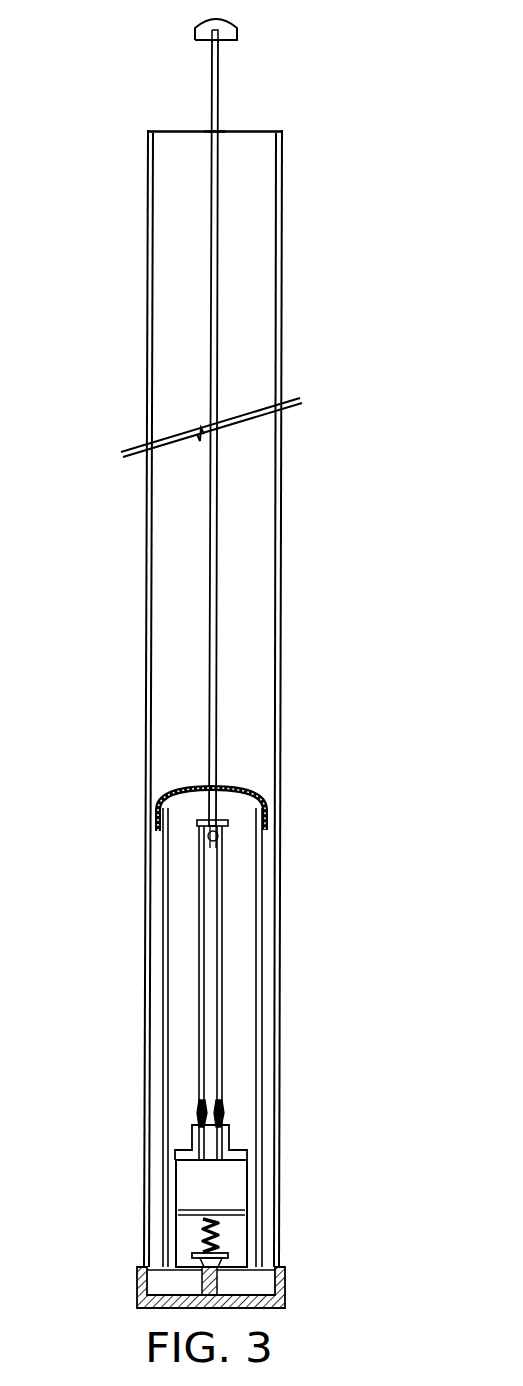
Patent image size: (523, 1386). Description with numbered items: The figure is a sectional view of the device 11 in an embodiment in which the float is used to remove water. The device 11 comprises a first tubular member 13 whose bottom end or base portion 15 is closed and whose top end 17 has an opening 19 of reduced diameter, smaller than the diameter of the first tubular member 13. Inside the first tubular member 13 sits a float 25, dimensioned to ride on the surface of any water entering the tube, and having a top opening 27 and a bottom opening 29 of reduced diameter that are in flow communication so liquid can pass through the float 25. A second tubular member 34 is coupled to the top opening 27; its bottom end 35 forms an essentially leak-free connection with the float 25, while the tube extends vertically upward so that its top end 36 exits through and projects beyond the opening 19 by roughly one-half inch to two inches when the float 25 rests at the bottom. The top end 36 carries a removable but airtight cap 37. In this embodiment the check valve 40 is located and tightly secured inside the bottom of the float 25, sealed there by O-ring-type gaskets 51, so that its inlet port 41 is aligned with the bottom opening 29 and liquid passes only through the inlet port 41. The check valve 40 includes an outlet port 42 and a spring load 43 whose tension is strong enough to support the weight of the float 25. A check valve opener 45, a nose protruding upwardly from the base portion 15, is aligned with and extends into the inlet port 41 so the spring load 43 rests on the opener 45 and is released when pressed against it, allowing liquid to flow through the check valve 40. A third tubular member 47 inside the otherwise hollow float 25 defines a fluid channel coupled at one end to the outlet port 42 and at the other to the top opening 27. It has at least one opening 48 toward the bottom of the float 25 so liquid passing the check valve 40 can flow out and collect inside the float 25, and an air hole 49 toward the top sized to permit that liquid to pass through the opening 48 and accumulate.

The device 11 is at (295, 466).
The first tubular member 13 is at (275, 645).
The base portion 15 is at (283, 1293).
The top end 17 is at (281, 135).
The opening 19 is at (212, 131).
The float 25 is at (260, 985).
The top opening 27 is at (218, 838).
The bottom opening 29 is at (202, 1270).
The second tubular member 34 is at (212, 298).
The bottom end 35 is at (228, 826).
The top end 36 is at (212, 48).
The cap 37 is at (232, 26).
The check valve 40 is at (193, 1195).
The inlet port 41 is at (283, 1272).
The outlet port 42 is at (210, 1158).
The spring load 43 is at (227, 1225).
The check valve opener 45 is at (202, 1278).
The third tubular member 47 is at (210, 975).
The opening 48 is at (202, 1122).
The air hole 49 is at (208, 853).
The O-ring-type gaskets 51 is at (167, 1162).